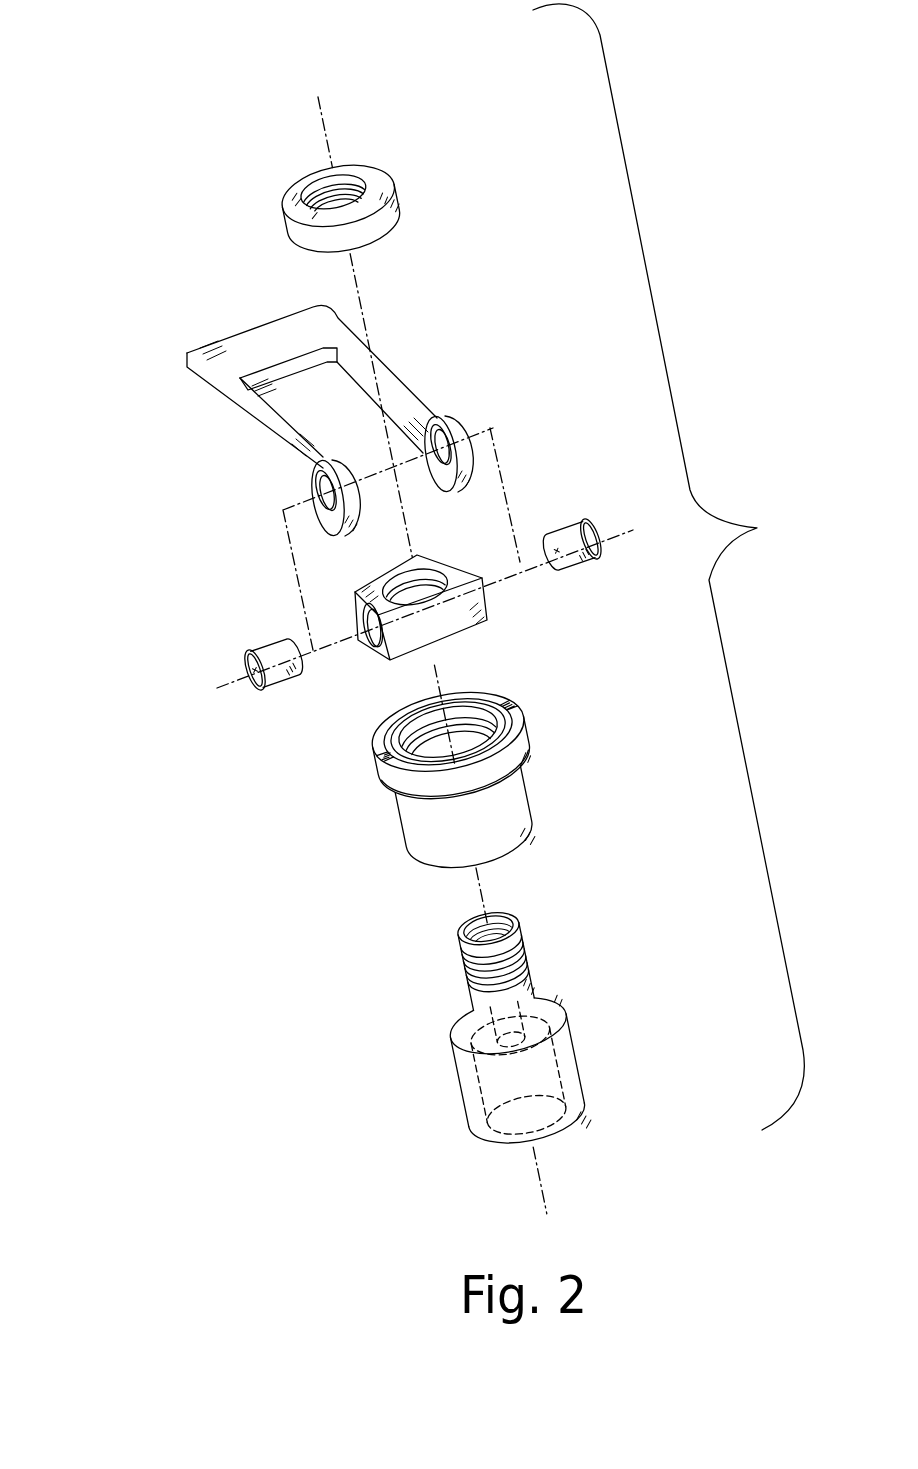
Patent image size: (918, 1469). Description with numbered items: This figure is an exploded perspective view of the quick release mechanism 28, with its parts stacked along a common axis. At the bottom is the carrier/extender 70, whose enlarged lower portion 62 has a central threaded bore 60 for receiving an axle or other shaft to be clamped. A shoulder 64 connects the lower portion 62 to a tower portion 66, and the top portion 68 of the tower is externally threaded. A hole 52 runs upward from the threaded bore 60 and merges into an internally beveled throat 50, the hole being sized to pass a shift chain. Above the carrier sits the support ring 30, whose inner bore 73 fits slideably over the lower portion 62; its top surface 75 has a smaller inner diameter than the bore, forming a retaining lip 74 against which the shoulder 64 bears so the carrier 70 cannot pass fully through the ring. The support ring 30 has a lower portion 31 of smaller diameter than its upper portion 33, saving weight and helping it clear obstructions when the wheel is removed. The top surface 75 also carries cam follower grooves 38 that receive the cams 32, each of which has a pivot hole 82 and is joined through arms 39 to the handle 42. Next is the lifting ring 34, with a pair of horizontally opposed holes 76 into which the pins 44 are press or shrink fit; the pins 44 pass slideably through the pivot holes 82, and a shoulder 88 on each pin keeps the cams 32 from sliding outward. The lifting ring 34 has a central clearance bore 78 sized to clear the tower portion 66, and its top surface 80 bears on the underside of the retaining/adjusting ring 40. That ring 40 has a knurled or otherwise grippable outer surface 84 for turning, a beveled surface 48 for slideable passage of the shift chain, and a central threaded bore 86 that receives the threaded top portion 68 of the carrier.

The quick release mechanism 28 is at (668, 567).
The support ring 30 is at (451, 763).
The lower portion 31 is at (513, 810).
The cams 32 is at (396, 467).
The upper portion 33 is at (439, 729).
The lifting ring 34 is at (441, 592).
The cam follower grooves 38 is at (372, 758).
The arms 39 is at (220, 423).
The retaining/adjusting ring 40 is at (336, 208).
The handle 42 is at (327, 416).
The pins 44 is at (411, 605).
The beveled surface 48 is at (298, 200).
The internally beveled throat 50 is at (484, 940).
The hole 52 is at (490, 933).
The central threaded bore 60 is at (517, 1120).
The enlarged lower portion 62 is at (526, 1078).
The shoulder 64 is at (470, 1027).
The tower portion 66 is at (530, 962).
The top portion 68 is at (477, 960).
The carrier/extender 70 is at (504, 1028).
The inner bore 73 is at (468, 730).
The retaining lip 74 is at (428, 718).
The top surface 75 is at (457, 700).
The holes 76 is at (373, 638).
The central clearance bore 78 is at (427, 580).
The top surface 80 is at (385, 577).
The pivot hole 82 is at (331, 500).
The outer surface 84 is at (372, 228).
The central threaded bore 86 is at (348, 183).
The shoulder 88 is at (270, 680).